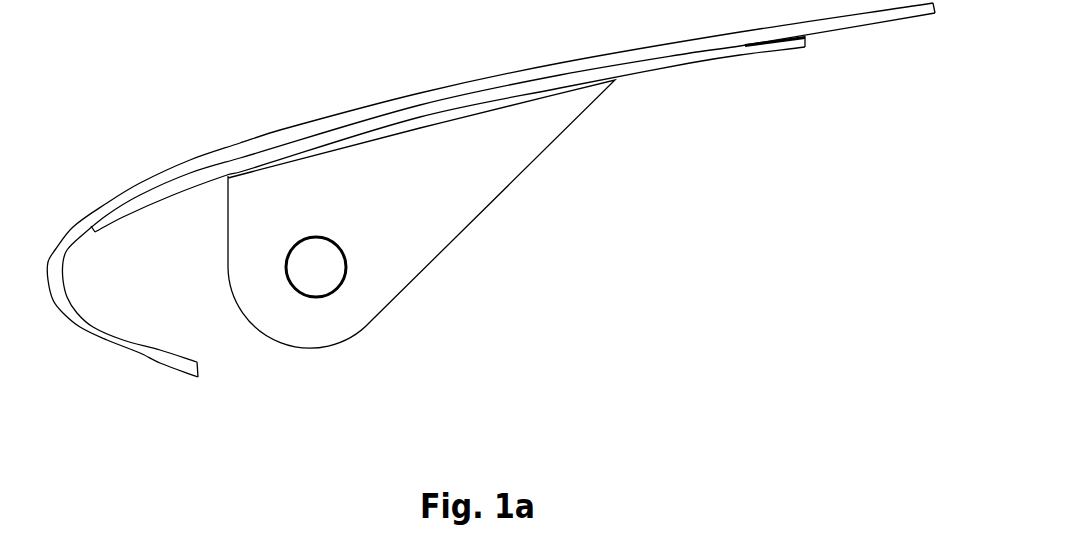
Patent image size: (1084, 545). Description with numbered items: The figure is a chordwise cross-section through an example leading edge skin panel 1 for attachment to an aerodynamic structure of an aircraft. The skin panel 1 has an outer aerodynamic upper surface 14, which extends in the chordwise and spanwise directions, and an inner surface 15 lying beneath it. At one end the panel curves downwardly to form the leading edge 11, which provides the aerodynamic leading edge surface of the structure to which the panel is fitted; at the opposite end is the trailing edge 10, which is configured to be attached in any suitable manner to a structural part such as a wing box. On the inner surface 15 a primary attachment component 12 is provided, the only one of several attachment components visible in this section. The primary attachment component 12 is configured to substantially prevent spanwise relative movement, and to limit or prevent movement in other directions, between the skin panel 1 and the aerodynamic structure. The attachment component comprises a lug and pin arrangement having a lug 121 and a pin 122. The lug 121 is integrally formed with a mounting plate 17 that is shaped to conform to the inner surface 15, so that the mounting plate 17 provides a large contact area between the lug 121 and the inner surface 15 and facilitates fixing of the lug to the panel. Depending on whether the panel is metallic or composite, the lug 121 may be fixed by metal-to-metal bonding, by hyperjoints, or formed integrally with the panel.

The LE skin panel 1 is at (499, 218).
The trailing edge 10 is at (921, 53).
The leading edge 11 is at (64, 360).
The primary attachment component 12 is at (421, 256).
The outer aerodynamic upper surface 14 is at (280, 130).
The inner surface 15 is at (660, 60).
The mounting plate 17 is at (753, 50).
The lug 121 is at (435, 186).
The pin 122 is at (312, 273).